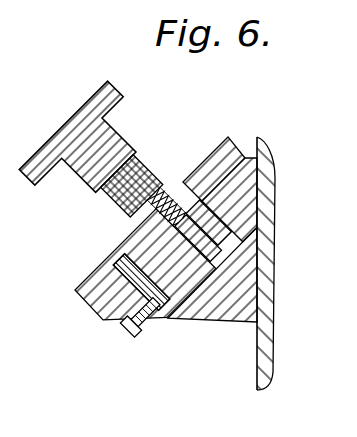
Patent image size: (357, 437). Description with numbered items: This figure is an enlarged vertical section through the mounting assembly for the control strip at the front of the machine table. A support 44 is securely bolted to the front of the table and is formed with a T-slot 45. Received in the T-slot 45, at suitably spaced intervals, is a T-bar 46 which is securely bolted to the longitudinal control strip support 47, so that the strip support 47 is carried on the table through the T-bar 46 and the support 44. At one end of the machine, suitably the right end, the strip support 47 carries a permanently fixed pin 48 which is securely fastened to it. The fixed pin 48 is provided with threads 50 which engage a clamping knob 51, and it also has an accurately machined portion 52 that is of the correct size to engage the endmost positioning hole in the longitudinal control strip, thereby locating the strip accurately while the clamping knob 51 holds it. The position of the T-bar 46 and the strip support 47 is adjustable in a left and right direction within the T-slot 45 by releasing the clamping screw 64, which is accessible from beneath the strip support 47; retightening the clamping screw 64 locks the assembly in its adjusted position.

The support 44 is at (200, 316).
The T-slot 45 is at (167, 300).
The T-bar 46 is at (210, 263).
The longitudinal control strip support 47 is at (203, 150).
The fixed pin 48 is at (132, 231).
The threads 50 is at (120, 207).
The clamping knob 51 is at (90, 180).
The accurately machined portion 52 is at (168, 200).
The clamping screw 64 is at (127, 328).